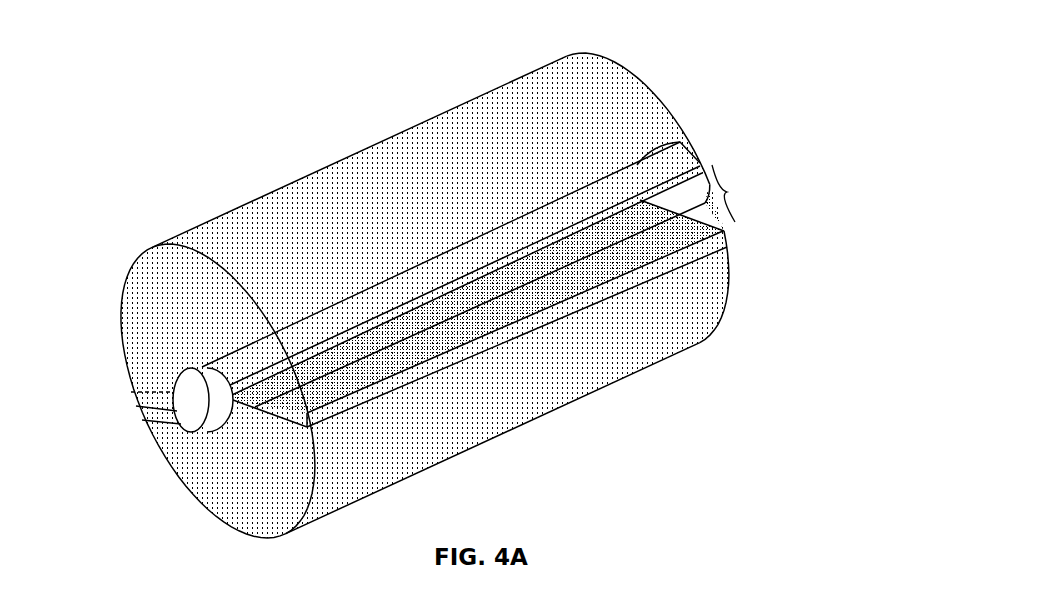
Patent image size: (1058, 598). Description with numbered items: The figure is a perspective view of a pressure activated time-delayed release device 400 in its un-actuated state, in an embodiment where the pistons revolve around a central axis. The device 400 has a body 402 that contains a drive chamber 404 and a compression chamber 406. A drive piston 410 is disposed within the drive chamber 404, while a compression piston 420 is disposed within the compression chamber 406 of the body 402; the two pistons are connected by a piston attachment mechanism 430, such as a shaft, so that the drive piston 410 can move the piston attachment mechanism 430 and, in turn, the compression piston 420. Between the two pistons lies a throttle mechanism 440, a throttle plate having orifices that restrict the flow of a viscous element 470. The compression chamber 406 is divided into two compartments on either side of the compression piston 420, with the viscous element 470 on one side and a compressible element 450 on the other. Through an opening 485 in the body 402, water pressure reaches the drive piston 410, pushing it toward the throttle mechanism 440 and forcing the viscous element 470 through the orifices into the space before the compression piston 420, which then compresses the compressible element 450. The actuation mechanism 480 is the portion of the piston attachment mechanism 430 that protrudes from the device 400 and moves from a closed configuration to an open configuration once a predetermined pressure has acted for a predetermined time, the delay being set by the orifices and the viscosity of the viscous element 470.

The pressure activated time-delayed release device 400 is at (641, 27).
The body 402 is at (670, 366).
The drive chamber 404 is at (148, 304).
The compression chamber 406 is at (247, 503).
The drive piston 410 is at (252, 367).
The compression piston 420 is at (158, 432).
The piston attachment mechanism 430 is at (638, 163).
The throttle mechanism 440 is at (140, 388).
The compressible element 450 is at (214, 461).
The viscous element 470 is at (212, 343).
The actuation mechanism 480 is at (173, 403).
The opening 485 is at (727, 192).